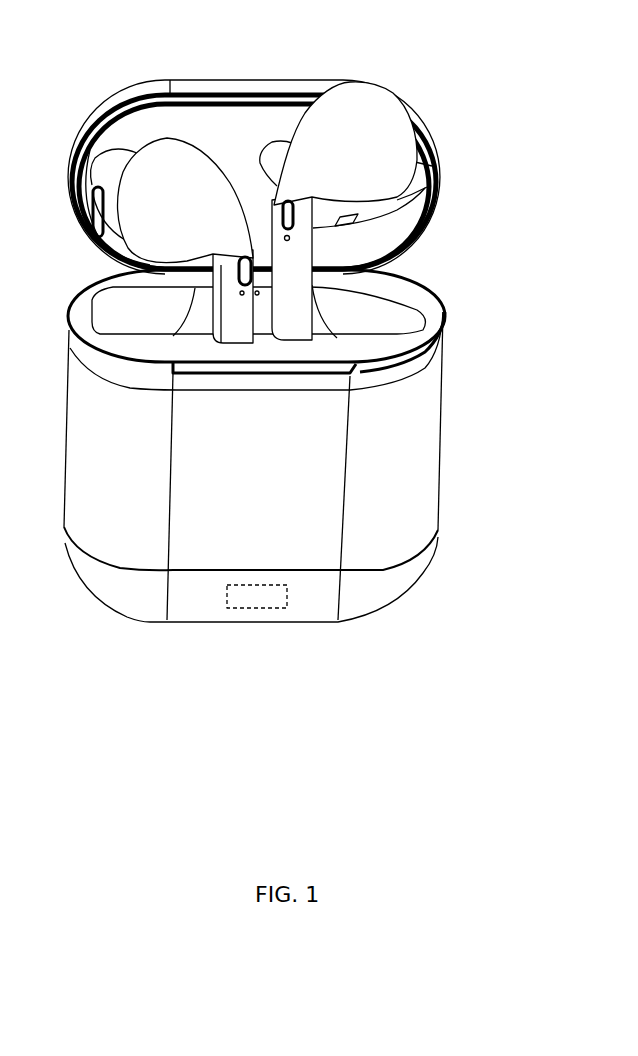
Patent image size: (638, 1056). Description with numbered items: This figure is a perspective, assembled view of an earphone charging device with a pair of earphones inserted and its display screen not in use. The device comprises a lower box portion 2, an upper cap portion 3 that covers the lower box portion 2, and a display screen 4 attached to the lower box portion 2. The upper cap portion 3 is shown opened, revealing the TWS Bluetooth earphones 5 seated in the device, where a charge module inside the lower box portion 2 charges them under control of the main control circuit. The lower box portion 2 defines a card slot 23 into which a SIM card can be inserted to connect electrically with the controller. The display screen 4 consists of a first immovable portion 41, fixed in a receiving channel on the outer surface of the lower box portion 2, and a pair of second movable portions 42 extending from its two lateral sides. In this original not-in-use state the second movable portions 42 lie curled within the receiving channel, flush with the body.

The lower box portion 2 is at (297, 472).
The upper cap portion 3 is at (273, 82).
The display screen 4 is at (297, 467).
The TWS Bluetooth earphones 5 is at (390, 140).
The card slot 23 is at (253, 608).
The first immovable portion 41 is at (302, 512).
The second movable portions 42 is at (387, 472).